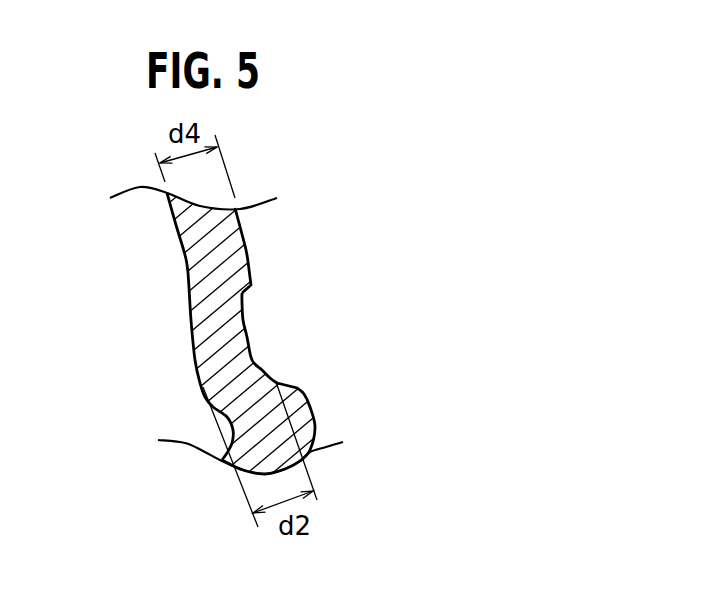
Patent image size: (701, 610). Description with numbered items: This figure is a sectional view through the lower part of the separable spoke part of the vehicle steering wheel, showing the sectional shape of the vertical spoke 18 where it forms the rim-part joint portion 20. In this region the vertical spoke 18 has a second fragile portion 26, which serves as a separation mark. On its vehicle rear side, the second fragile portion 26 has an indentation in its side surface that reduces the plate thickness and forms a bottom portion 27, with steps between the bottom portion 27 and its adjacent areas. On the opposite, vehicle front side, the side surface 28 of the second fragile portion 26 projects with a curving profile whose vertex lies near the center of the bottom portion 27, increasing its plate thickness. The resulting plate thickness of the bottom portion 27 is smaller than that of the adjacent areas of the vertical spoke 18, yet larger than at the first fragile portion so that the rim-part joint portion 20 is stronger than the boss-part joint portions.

The vertical spoke 18 is at (188, 272).
The rim-part joint portion 20 is at (266, 296).
The second fragile portion 26 is at (272, 363).
The bottom portion 27 is at (247, 335).
The side surface 28 is at (193, 382).